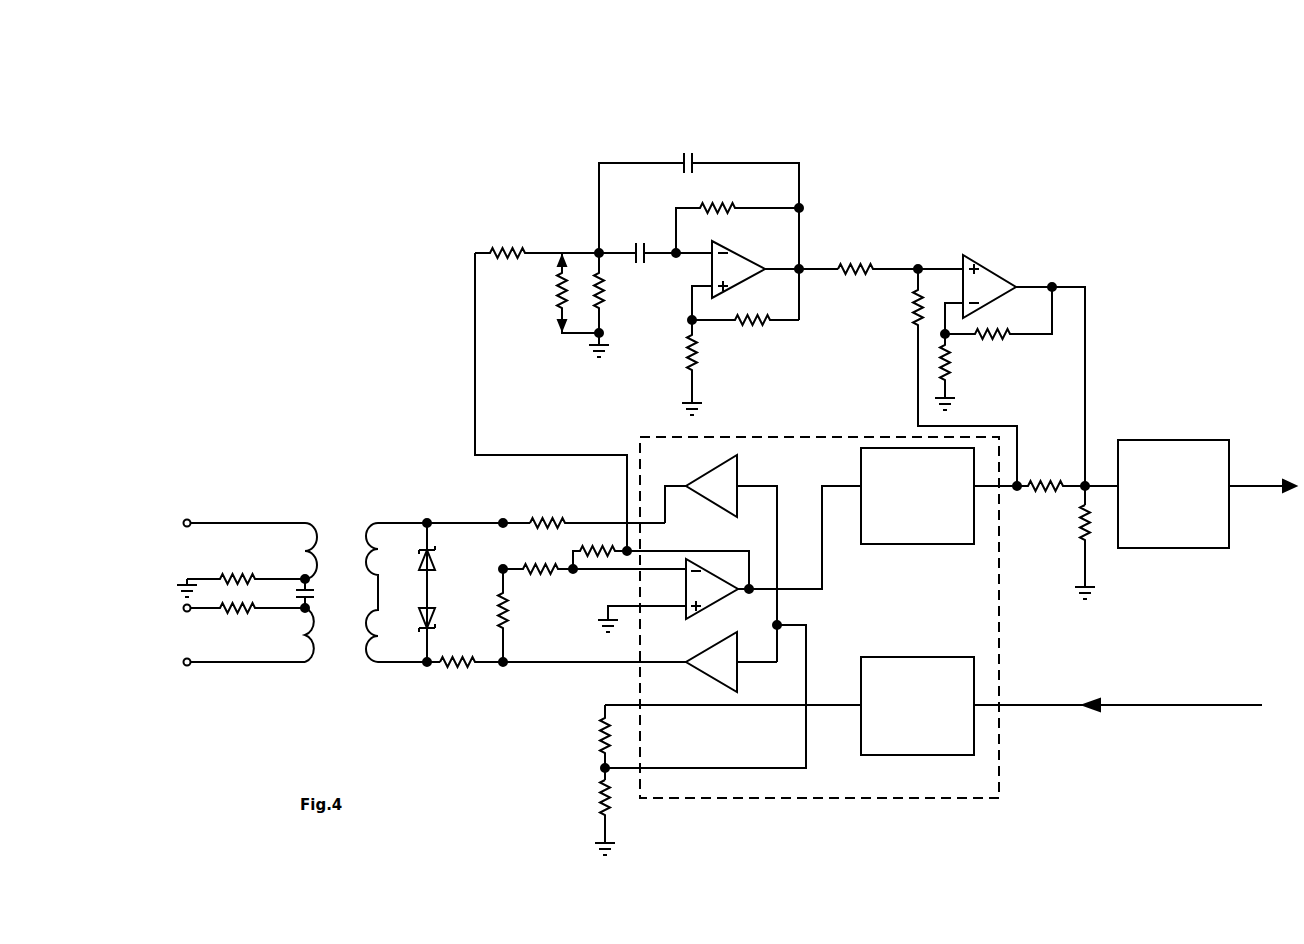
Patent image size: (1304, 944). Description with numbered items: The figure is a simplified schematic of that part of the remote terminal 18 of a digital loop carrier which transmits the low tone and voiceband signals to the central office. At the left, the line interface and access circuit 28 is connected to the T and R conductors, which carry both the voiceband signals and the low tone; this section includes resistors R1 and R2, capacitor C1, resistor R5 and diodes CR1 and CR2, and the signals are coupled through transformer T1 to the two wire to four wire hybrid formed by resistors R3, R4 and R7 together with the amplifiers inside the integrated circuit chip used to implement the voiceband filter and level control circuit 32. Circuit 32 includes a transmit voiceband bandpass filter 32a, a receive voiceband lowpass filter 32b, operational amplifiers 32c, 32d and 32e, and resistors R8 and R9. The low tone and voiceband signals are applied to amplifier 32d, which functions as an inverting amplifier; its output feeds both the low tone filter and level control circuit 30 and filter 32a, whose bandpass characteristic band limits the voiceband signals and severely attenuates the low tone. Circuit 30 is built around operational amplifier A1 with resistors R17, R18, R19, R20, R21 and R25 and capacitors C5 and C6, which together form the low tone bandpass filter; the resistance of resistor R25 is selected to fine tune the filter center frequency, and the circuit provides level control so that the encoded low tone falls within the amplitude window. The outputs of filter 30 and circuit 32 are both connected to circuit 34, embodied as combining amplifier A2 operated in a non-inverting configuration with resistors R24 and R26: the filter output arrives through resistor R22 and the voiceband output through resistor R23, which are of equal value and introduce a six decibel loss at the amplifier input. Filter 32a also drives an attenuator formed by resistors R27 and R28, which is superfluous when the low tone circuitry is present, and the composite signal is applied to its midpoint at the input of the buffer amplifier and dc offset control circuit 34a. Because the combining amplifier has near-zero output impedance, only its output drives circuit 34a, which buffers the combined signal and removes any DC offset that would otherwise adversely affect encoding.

The remote terminal 18 is at (329, 235).
The line interface and access circuit 28 is at (437, 488).
The low tone filter and level control circuit 30 is at (515, 173).
The combining circuit 34 is at (1058, 203).
The buffer amplifier and dc offset control circuit 34a is at (1146, 440).
The voiceband filter and level control circuit 32 is at (834, 799).
The transmit voiceband bandpass filter 32a is at (893, 538).
The receive voiceband lowpass filter 32b is at (893, 660).
The operational amplifier 32c is at (720, 472).
The inverting operational amplifier 32d is at (708, 592).
The operational amplifier 32e is at (717, 674).
The T conductor T is at (245, 512).
The R conductor R is at (245, 674).
The transformer T1 is at (339, 603).
The capacitor C1 is at (318, 593).
The resistor R1 is at (241, 575).
The resistor R2 is at (235, 621).
The resistor R3 is at (516, 613).
The resistor R4 is at (597, 513).
The resistor R5 is at (563, 676).
The resistor R7 is at (594, 551).
The resistor R8 is at (591, 742).
The resistor R9 is at (593, 817).
The diode CR1 is at (447, 557).
The diode CR2 is at (447, 627).
The resistor R17 is at (555, 243).
The resistor R18 is at (615, 305).
The resistor R19 is at (739, 217).
The resistor R20 is at (743, 316).
The resistor R21 is at (708, 367).
The resistor R22 is at (900, 259).
The resistor R23 is at (946, 377).
The resistor R24 is at (996, 323).
The resistor R25 is at (558, 293).
The resistor R26 is at (962, 372).
The resistor R27 is at (1046, 474).
The resistor R28 is at (1066, 552).
The capacitor C5 is at (699, 227).
The capacitor C6 is at (672, 241).
The operational amplifier A1 is at (750, 258).
The combining amplifier A2 is at (1024, 377).